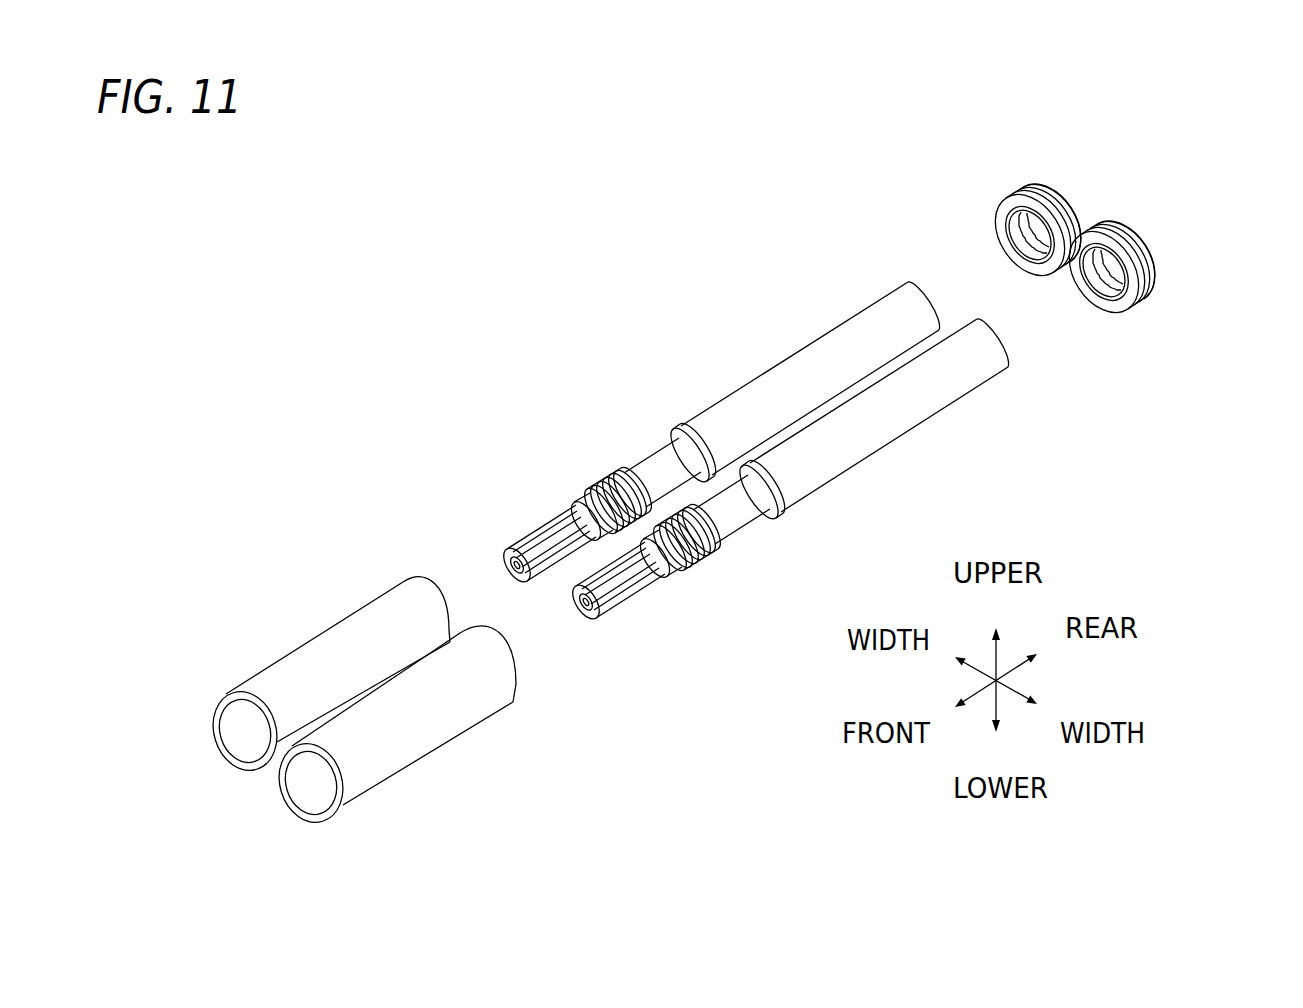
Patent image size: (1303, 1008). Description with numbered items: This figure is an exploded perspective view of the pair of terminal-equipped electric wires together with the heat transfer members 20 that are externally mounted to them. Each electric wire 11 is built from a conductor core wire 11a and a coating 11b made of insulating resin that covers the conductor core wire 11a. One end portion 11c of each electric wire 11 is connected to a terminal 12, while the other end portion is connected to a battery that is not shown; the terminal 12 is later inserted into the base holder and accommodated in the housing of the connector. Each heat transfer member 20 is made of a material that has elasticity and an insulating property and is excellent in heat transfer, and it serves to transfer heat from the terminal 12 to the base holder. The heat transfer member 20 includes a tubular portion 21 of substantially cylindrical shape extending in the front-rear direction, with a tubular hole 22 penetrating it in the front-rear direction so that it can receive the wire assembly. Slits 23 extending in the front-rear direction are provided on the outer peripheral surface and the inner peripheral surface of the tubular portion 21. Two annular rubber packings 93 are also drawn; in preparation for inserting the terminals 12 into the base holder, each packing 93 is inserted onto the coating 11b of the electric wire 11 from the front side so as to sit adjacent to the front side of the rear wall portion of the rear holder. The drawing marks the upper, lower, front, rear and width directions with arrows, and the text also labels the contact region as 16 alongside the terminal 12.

The electric wire 11 is at (522, 321).
The conductor core wire 11a is at (663, 457).
The coating 11b is at (862, 312).
The one end portion 11c is at (662, 472).
The terminal 12 is at (530, 527).
The contact piece 16 is at (590, 558).
The heat transfer member 20 is at (248, 658).
The tubular portion 21 is at (357, 622).
The tubular hole 22 is at (240, 733).
The slit 23 is at (397, 768).
The annular rubber packing 93 is at (1032, 177).